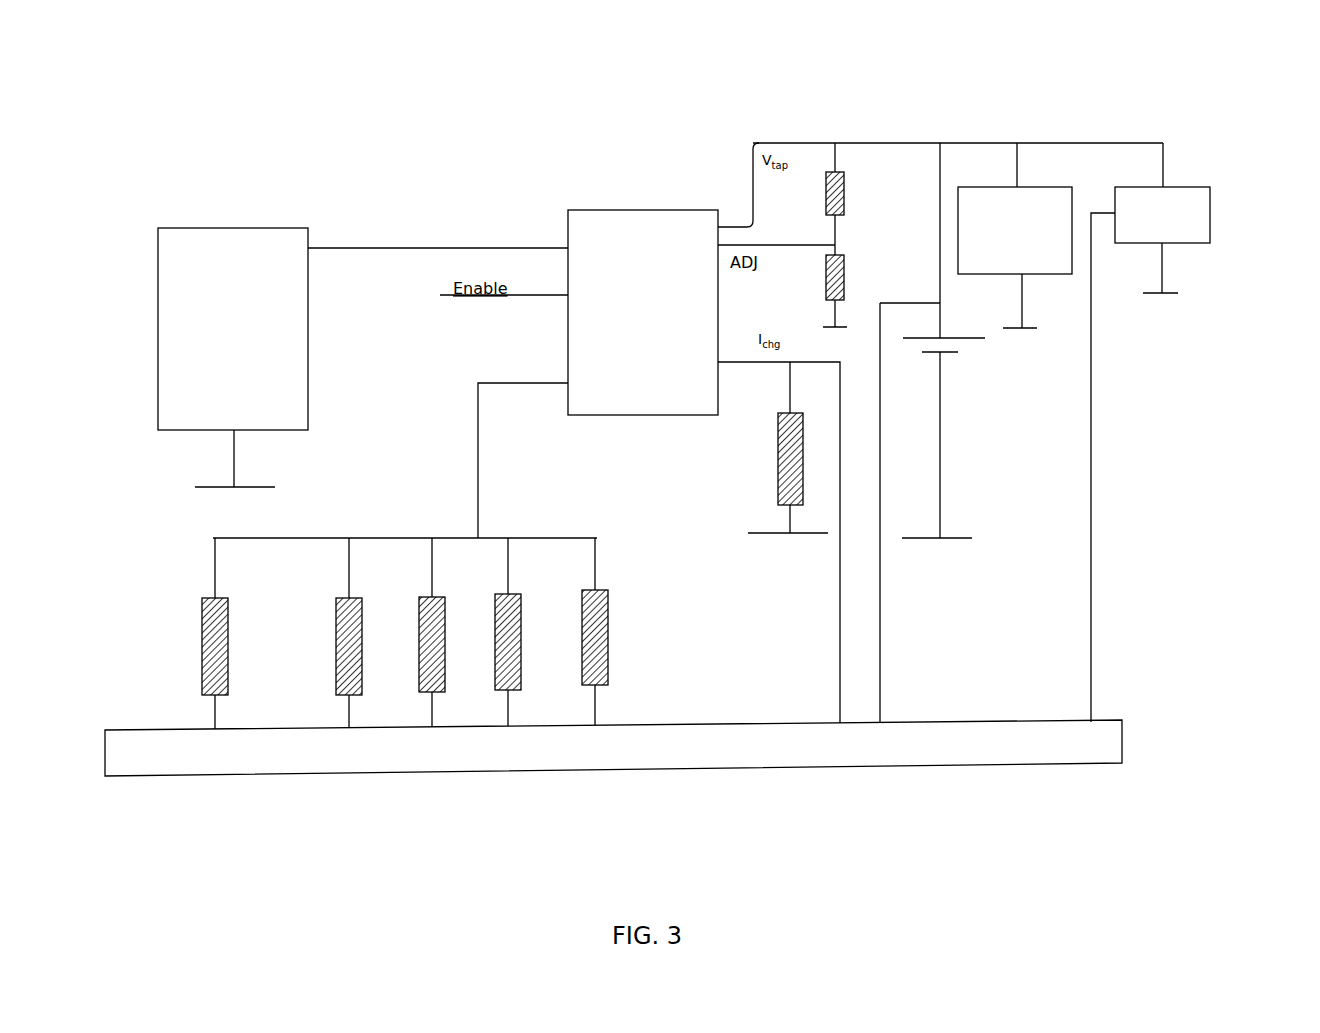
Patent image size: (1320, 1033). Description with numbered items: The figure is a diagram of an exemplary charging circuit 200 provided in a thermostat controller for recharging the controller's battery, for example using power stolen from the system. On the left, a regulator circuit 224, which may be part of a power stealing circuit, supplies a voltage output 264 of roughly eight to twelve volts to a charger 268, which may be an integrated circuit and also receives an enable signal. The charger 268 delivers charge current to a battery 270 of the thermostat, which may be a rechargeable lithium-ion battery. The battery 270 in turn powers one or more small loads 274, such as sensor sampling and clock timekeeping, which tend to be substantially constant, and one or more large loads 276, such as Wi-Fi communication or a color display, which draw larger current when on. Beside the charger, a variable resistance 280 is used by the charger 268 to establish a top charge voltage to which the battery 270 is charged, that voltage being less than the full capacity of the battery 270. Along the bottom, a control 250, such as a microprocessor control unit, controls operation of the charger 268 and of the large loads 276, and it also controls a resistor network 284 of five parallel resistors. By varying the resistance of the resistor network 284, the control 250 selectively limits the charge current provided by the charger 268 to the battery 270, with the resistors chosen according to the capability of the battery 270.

The charging circuit 200 is at (488, 138).
The regulator circuit 224 is at (233, 357).
The control 250 is at (370, 776).
The voltage output 264 is at (347, 291).
The charger 268 is at (643, 312).
The battery 270 is at (972, 350).
The small loads 274 is at (1050, 185).
The large loads 276 is at (1198, 183).
The variable resistance 280 is at (860, 170).
The resistor network 284 is at (132, 600).